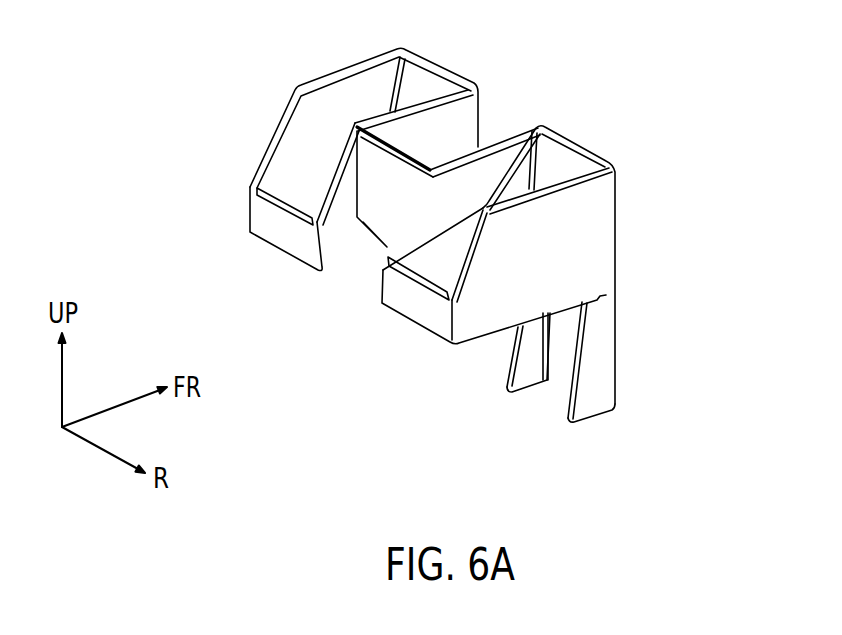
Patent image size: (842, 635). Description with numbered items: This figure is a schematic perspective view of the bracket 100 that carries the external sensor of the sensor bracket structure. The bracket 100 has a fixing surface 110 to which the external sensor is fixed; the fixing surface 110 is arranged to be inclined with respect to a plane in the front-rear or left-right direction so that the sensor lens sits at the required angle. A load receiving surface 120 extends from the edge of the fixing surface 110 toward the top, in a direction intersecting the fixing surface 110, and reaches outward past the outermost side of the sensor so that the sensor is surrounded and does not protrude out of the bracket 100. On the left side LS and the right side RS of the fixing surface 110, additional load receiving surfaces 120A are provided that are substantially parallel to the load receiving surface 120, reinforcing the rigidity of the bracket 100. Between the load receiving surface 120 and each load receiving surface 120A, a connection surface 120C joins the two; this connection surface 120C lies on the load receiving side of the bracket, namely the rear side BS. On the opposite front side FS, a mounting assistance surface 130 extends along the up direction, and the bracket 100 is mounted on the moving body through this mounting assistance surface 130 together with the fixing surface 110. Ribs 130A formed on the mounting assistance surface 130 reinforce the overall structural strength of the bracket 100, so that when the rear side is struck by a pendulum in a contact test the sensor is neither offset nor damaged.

The bracket 100 is at (745, 450).
The fixing surface 110 is at (387, 247).
The load receiving surface 120 is at (446, 206).
The load receiving surface 120A is at (327, 79).
The connection surface 120C is at (263, 210).
The mounting assistance surface 130 is at (546, 391).
The ribs 130A is at (530, 360).
The left side LS is at (424, 119).
The right side RS is at (506, 130).
The front side FS is at (587, 148).
The rear side BS is at (300, 238).